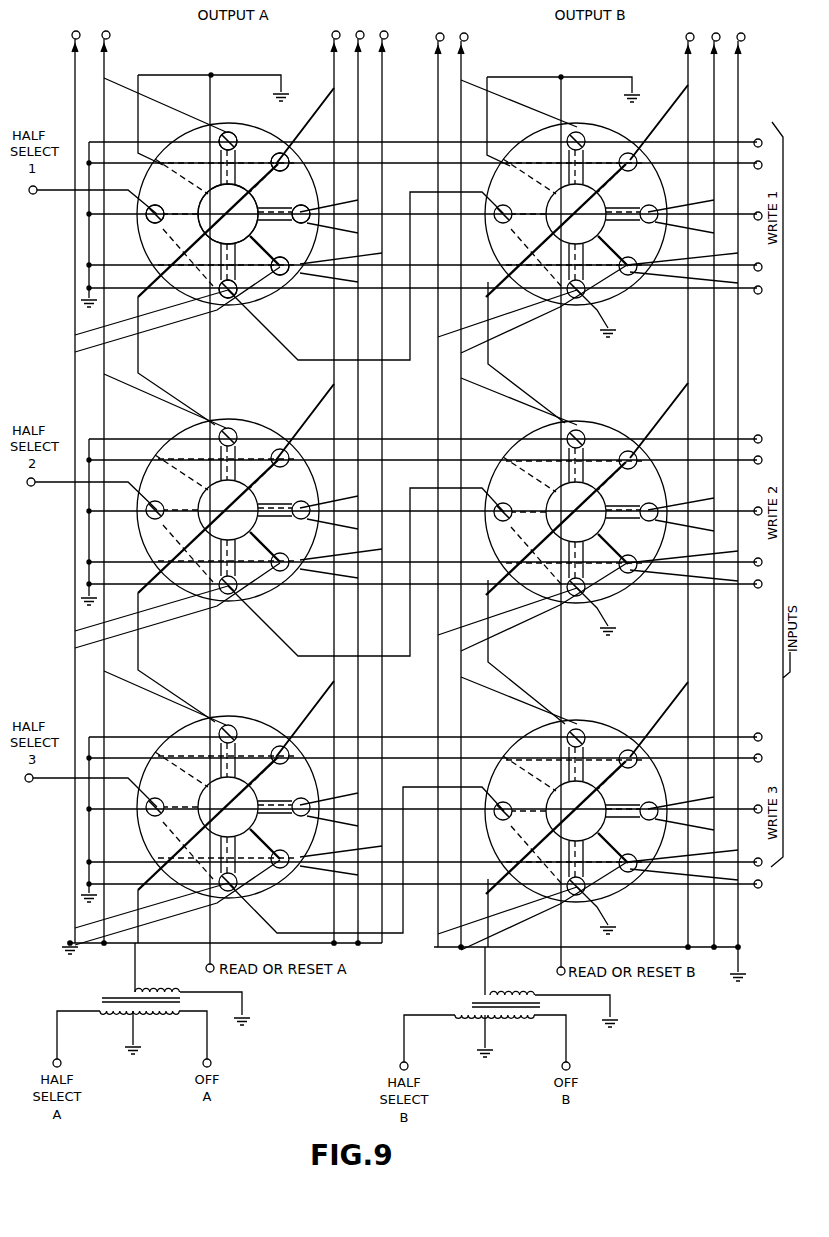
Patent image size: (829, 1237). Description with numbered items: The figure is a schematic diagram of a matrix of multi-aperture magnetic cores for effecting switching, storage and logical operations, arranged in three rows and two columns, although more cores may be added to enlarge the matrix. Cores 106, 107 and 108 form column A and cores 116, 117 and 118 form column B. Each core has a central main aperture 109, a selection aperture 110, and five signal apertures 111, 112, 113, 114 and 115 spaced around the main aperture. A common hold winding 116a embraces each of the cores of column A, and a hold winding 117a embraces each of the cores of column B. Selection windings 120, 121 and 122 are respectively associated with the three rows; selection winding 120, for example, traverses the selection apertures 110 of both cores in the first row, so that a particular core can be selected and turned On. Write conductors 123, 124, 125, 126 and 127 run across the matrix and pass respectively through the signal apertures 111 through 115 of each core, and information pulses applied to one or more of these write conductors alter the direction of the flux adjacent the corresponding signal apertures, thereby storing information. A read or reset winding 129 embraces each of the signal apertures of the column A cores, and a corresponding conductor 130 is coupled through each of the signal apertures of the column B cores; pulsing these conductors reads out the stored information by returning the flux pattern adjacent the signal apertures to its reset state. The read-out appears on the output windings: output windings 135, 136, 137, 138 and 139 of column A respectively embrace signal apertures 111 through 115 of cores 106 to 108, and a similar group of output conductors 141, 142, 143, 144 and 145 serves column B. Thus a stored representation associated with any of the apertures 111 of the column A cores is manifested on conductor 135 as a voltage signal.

The core 106 is at (252, 131).
The core 107 is at (243, 428).
The core 108 is at (243, 722).
The main aperture 109 is at (204, 196).
The selection aperture 110 is at (152, 223).
The signal aperture 111 is at (230, 132).
The signal aperture 112 is at (279, 172).
The signal aperture 113 is at (304, 224).
The signal aperture 114 is at (282, 276).
The signal aperture 115 is at (240, 298).
The core 116 is at (604, 131).
The hold winding 116a is at (138, 128).
The core 117 is at (596, 428).
The hold winding 117a is at (487, 128).
The core 118 is at (596, 725).
The selection winding 120 is at (389, 362).
The selection winding 121 is at (389, 658).
The selection winding 122 is at (389, 935).
The write conductor 123 is at (757, 143).
The write conductor 124 is at (758, 165).
The write conductor 125 is at (757, 216).
The write conductor 126 is at (757, 267).
The write conductor 127 is at (757, 290).
The read or reset winding 129 is at (218, 918).
The read or reset conductor 130 is at (569, 921).
The output winding 135 is at (104, 70).
The output winding 136 is at (334, 70).
The output winding 137 is at (358, 85).
The output winding 138 is at (382, 117).
The output winding 139 is at (76, 78).
The output conductor 141 is at (461, 70).
The output conductor 142 is at (688, 68).
The output conductor 143 is at (714, 83).
The output conductor 144 is at (738, 105).
The output conductor 145 is at (438, 76).